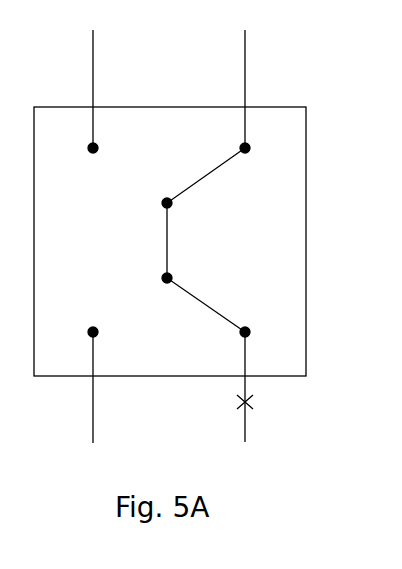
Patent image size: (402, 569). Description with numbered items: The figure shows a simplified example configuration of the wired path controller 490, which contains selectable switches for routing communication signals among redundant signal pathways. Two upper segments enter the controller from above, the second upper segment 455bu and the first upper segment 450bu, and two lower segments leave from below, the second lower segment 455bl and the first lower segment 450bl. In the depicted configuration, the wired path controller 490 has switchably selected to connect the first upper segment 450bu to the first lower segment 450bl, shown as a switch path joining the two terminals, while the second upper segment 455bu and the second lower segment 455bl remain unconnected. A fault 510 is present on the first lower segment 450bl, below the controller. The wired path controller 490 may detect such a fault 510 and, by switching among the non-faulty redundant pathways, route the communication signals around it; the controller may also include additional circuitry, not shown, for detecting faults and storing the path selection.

The wired path controller 490 is at (311, 218).
The second upper segment 455bu is at (91, 90).
The first upper segment 450bu is at (247, 88).
The second lower segment 455bl is at (91, 408).
The first lower segment 450bl is at (247, 428).
The fault 510 is at (254, 402).